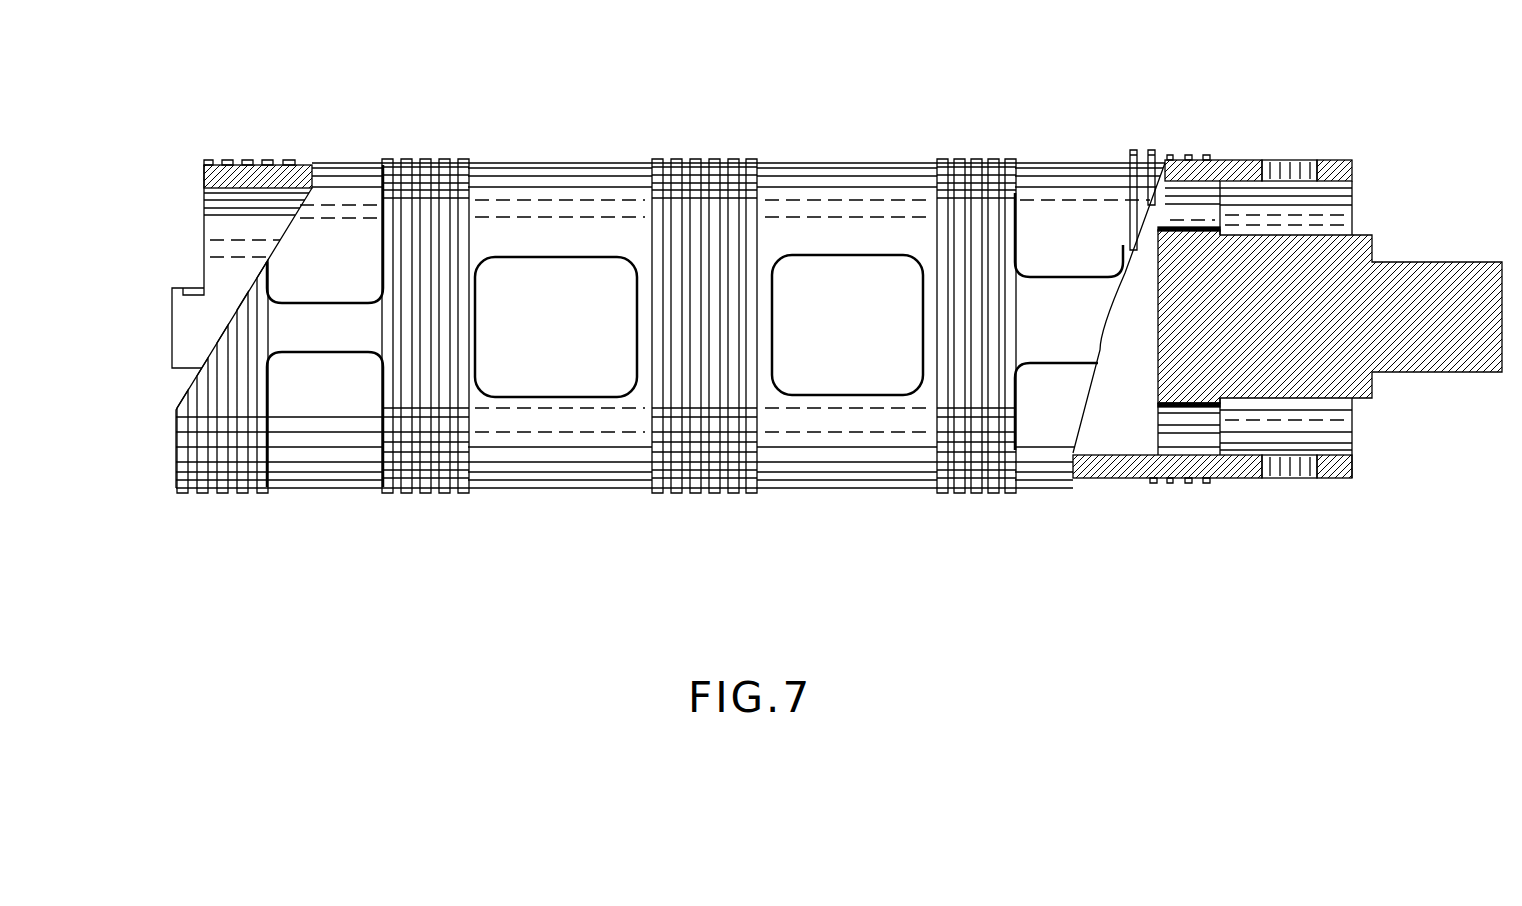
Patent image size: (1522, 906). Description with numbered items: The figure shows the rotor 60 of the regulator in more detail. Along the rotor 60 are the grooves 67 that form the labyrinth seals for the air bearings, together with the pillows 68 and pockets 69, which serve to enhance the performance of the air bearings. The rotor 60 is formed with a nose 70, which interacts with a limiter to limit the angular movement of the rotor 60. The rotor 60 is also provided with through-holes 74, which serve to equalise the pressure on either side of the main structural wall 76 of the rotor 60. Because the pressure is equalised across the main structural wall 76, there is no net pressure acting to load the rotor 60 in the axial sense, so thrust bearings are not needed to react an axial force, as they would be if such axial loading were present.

The rotor 60 is at (545, 504).
The grooves 67 is at (965, 480).
The pillows 68 is at (1031, 302).
The pockets 69 is at (1108, 200).
The nose 70 is at (183, 288).
The through-holes 74 is at (1183, 433).
The main structural wall 76 is at (1105, 480).